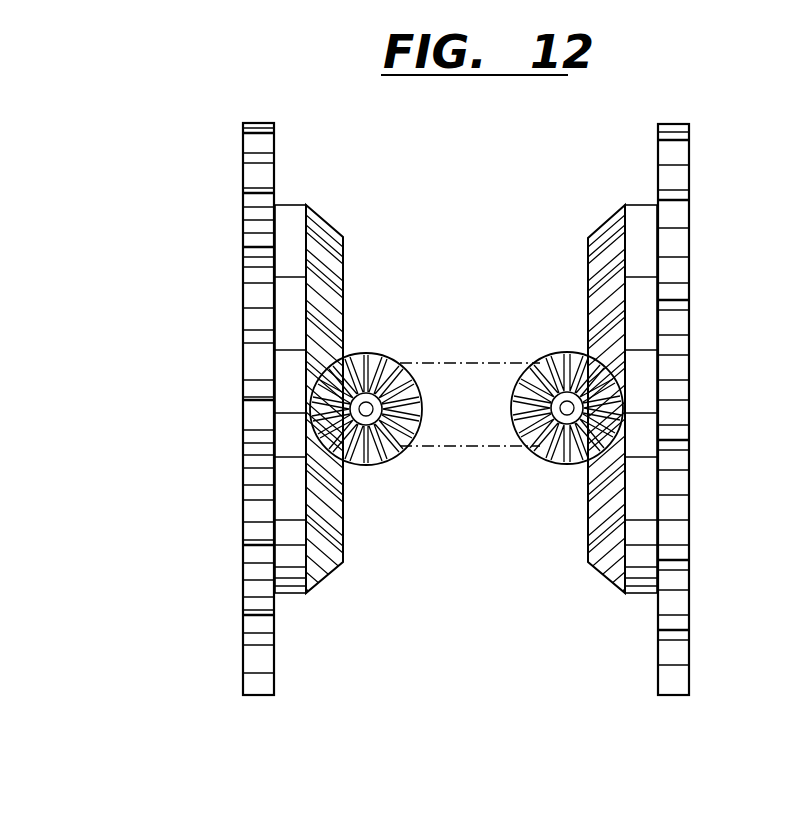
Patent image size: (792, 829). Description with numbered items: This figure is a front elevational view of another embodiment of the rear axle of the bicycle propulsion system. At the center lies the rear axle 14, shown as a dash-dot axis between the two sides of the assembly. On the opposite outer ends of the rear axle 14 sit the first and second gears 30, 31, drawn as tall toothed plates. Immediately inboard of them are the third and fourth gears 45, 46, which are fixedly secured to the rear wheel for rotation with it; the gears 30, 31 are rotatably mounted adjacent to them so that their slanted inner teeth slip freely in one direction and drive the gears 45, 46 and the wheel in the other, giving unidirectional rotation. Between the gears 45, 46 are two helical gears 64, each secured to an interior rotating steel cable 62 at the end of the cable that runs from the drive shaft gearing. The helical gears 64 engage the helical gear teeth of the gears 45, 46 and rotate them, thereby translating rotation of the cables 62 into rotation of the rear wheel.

The first gear 30 is at (267, 140).
The second gear 31 is at (678, 150).
The third gear 45 is at (320, 278).
The fourth gear 46 is at (615, 280).
The helical gear 64 is at (377, 353).
The interior rotating steel cable 62 is at (364, 412).
The rear axle 14 is at (450, 446).